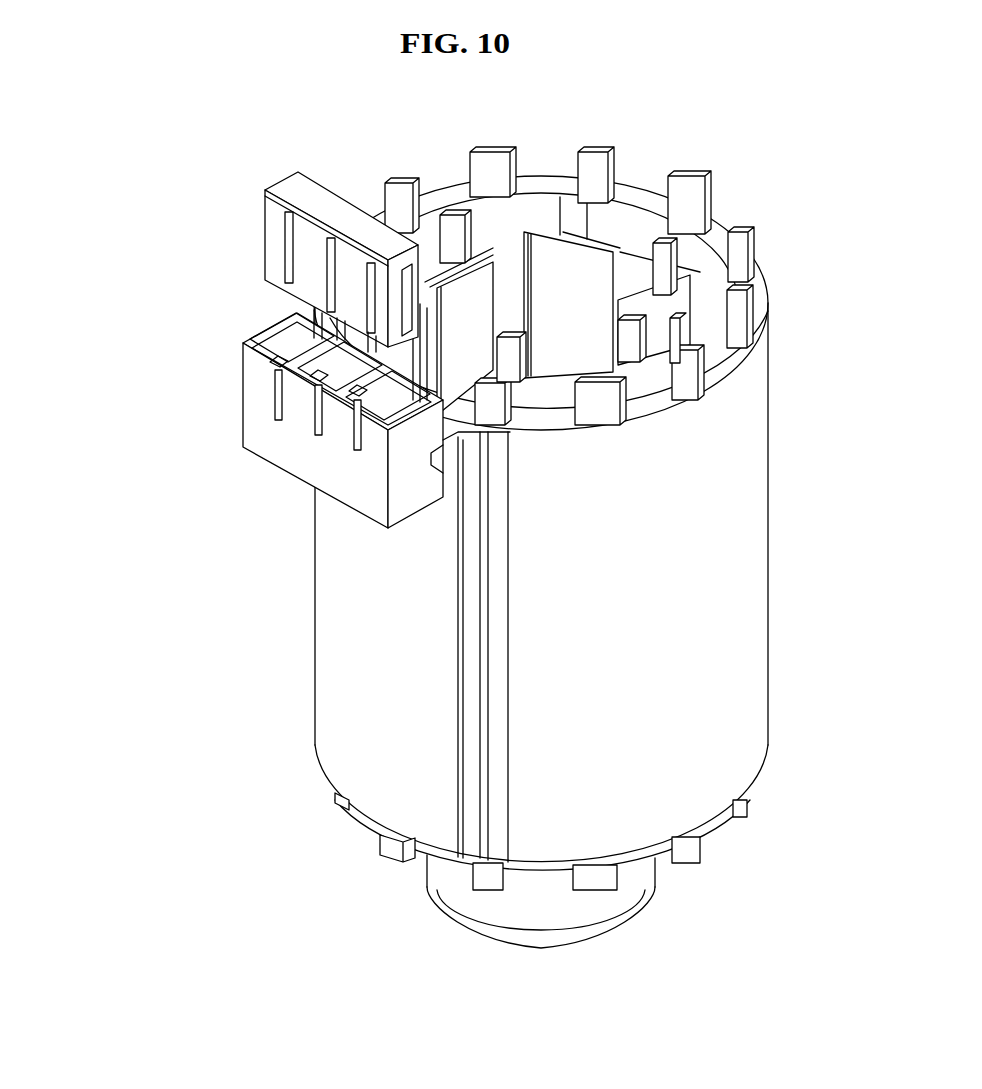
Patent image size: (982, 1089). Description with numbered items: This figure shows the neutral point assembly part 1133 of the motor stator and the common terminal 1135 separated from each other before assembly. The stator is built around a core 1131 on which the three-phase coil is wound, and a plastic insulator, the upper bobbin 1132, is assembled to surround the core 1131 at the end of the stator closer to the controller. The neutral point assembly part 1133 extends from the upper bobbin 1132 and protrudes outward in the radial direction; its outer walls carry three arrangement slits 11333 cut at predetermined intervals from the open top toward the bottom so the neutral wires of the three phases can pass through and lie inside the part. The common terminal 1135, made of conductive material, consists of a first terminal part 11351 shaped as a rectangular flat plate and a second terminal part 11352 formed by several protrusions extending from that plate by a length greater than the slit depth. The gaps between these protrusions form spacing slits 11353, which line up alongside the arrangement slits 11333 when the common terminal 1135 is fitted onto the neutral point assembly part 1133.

The core 1131 is at (777, 396).
The upper bobbin 1132 is at (632, 192).
The neutral point assembly part 1133 is at (273, 414).
The arrangement slits 11333 is at (243, 448).
The common terminal 1135 is at (227, 252).
The first terminal part 11351 is at (266, 190).
The second terminal part 11352 is at (265, 222).
The spacing slits 11353 is at (290, 250).